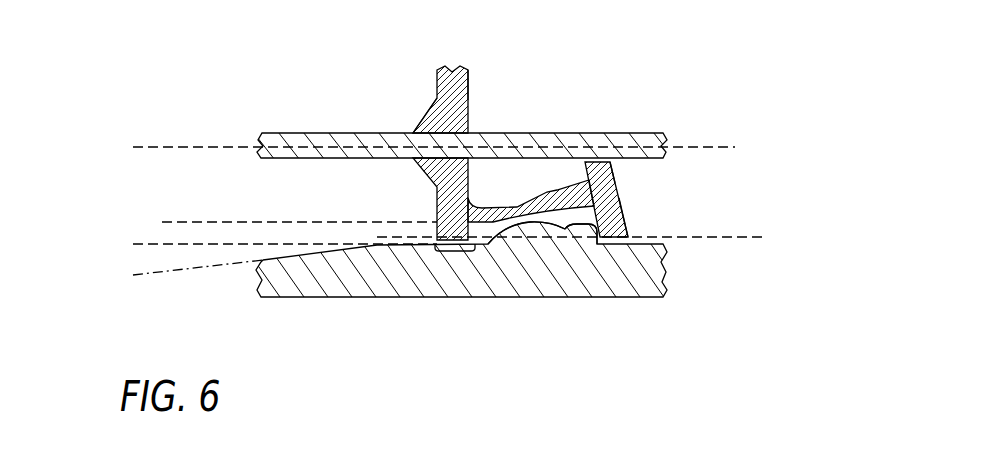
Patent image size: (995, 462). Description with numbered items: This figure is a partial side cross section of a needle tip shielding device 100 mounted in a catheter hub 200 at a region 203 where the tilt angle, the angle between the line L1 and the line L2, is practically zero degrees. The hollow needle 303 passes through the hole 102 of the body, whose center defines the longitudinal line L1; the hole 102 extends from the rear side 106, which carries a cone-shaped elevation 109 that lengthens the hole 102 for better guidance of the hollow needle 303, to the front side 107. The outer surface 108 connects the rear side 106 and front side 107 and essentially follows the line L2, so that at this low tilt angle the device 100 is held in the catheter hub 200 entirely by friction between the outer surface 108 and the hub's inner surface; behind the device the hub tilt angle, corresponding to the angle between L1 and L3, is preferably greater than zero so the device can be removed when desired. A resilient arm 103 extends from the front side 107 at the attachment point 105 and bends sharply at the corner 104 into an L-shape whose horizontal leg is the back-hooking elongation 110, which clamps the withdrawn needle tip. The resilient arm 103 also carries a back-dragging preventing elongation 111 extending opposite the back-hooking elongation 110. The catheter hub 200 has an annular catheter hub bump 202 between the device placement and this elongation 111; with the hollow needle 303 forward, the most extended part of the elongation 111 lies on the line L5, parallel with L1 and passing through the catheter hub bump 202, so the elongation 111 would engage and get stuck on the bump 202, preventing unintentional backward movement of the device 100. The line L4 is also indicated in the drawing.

The needle tip shielding device 100 is at (479, 91).
The hole 102 is at (402, 129).
The resilient arm 103 is at (514, 190).
The corner 104 is at (577, 169).
The attachment point 105 is at (479, 188).
The rear side 106 is at (436, 88).
The front side 107 is at (474, 87).
The outer surface 108 is at (453, 249).
The cone-shaped elevation 109 is at (416, 108).
The back-hooking elongation 110 is at (614, 161).
The back-dragging preventing elongation 111 is at (624, 197).
The catheter hub 200 is at (290, 278).
The catheter hub bump 202 is at (597, 244).
The region 203 is at (463, 249).
The hollow needle 303 is at (298, 140).
The line L1 is at (419, 148).
The line L2 is at (270, 245).
The line L3 is at (183, 275).
The axis line L4 is at (284, 221).
The line L5 is at (587, 238).